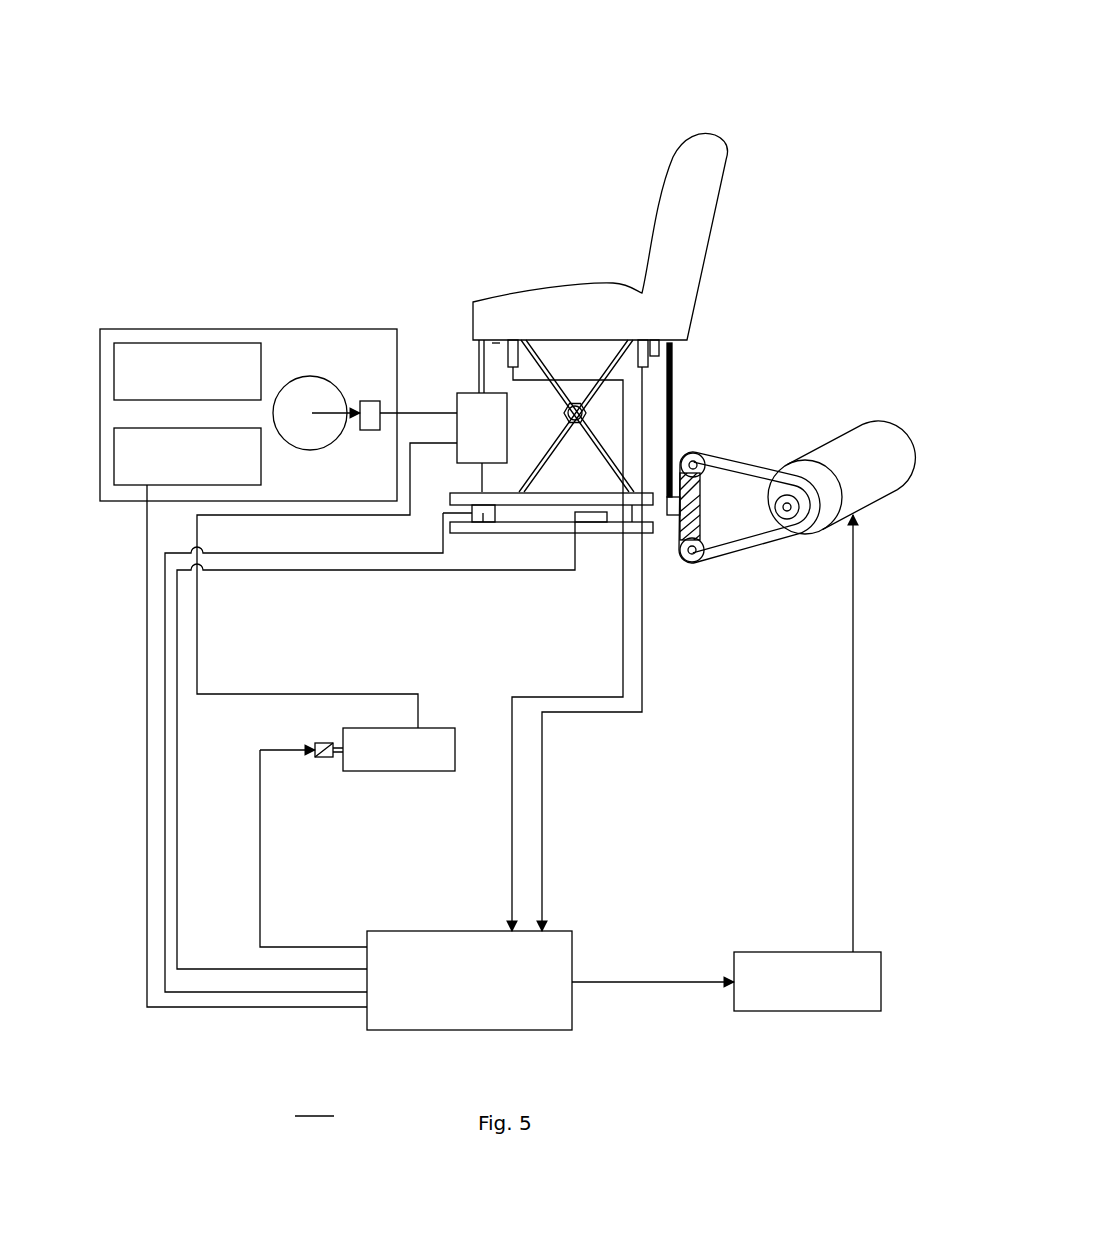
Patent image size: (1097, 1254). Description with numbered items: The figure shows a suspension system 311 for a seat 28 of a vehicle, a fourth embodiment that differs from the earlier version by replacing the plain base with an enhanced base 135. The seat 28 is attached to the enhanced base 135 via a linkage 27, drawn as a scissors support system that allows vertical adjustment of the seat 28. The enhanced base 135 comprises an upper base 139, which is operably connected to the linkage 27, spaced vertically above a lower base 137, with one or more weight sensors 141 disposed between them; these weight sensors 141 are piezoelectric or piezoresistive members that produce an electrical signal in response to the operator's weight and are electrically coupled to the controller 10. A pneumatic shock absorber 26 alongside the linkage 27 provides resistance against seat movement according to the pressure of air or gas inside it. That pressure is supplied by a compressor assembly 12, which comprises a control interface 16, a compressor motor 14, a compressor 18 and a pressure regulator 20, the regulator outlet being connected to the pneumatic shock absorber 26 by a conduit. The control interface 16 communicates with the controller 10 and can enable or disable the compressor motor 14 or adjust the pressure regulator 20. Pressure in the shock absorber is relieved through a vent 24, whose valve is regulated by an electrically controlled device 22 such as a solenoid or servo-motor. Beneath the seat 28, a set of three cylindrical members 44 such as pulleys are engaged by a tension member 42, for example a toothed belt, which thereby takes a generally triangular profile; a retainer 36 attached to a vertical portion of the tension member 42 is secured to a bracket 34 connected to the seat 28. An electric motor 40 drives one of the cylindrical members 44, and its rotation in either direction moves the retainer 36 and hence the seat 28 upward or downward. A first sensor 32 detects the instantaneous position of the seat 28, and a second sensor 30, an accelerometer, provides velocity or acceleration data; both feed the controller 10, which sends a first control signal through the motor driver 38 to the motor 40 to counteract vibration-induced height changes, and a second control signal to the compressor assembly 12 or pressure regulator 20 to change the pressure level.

The controller 10 is at (572, 1005).
The compressor assembly 12 is at (122, 329).
The compressor motor 14 is at (188, 343).
The control interface 16 is at (132, 485).
The compressor 18 is at (376, 288).
The pressure regulator 20 is at (370, 401).
The device for regulating the valve 22 is at (330, 757).
The vent 24 is at (377, 771).
The pneumatic shock absorber 26 is at (457, 400).
The linkage 27 is at (578, 345).
The seat 28 is at (718, 172).
The second sensor 30 is at (496, 345).
The first sensor 32 is at (655, 350).
The bracket 34 is at (673, 388).
The retainer 36 is at (677, 480).
The motor driver 38 is at (782, 1011).
The electric motor 40 is at (807, 537).
The tension member 42 is at (753, 545).
The cylindrical members 44 is at (775, 503).
The enhanced base 135 is at (510, 543).
The lower base 137 is at (470, 505).
The upper base 139 is at (452, 499).
The weight sensors 141 is at (528, 657).
The suspension system 311 is at (314, 1105).